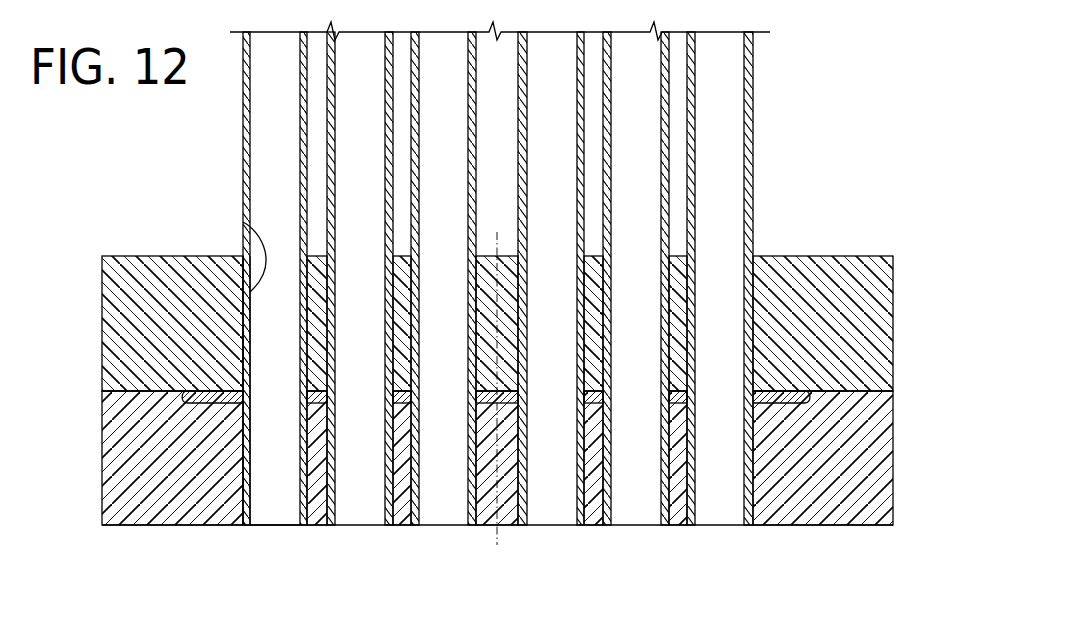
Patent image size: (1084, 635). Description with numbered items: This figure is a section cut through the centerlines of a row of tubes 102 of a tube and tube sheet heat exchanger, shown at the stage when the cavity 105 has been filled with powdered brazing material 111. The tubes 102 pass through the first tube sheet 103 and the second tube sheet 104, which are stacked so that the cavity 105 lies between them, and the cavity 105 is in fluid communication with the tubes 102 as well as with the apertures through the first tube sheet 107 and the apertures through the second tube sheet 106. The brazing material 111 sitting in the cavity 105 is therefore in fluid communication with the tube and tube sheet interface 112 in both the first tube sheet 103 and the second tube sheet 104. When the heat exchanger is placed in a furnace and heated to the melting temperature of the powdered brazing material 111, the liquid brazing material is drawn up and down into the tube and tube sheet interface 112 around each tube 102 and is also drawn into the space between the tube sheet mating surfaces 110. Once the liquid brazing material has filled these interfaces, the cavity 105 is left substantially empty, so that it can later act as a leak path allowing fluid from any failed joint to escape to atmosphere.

The tubes 102 is at (330, 148).
The first tube sheet 103 is at (147, 272).
The second tube sheet 104 is at (143, 478).
The cavity 105 is at (190, 402).
The second tube sheet 106 is at (251, 470).
The first tube sheet 107 is at (243, 222).
The tube sheet mating surfaces 110 is at (157, 388).
The powdered brazing material 111 is at (220, 403).
The tube and tube sheet interface 112 is at (243, 337).